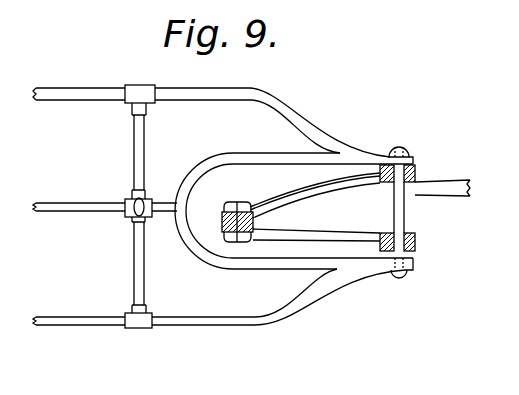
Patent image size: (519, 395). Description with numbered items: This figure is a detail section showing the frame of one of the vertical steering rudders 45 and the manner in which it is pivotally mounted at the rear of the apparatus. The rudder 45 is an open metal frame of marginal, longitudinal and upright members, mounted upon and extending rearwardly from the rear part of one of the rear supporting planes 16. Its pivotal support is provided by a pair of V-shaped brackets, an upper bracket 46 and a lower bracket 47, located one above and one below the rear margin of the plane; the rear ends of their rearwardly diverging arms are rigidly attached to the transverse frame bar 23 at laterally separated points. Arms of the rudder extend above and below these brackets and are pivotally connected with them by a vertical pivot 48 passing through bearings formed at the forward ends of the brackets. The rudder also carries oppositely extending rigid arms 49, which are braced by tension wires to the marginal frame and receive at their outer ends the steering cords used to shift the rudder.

The rear supporting plane 16 is at (459, 180).
The transverse frame bar 23 is at (223, 228).
The steering rudder 45 is at (68, 83).
The upper bracket 46 is at (288, 190).
The lower bracket 47 is at (282, 238).
The vertical pivot 48 is at (404, 222).
The rigid arm 49 is at (130, 212).